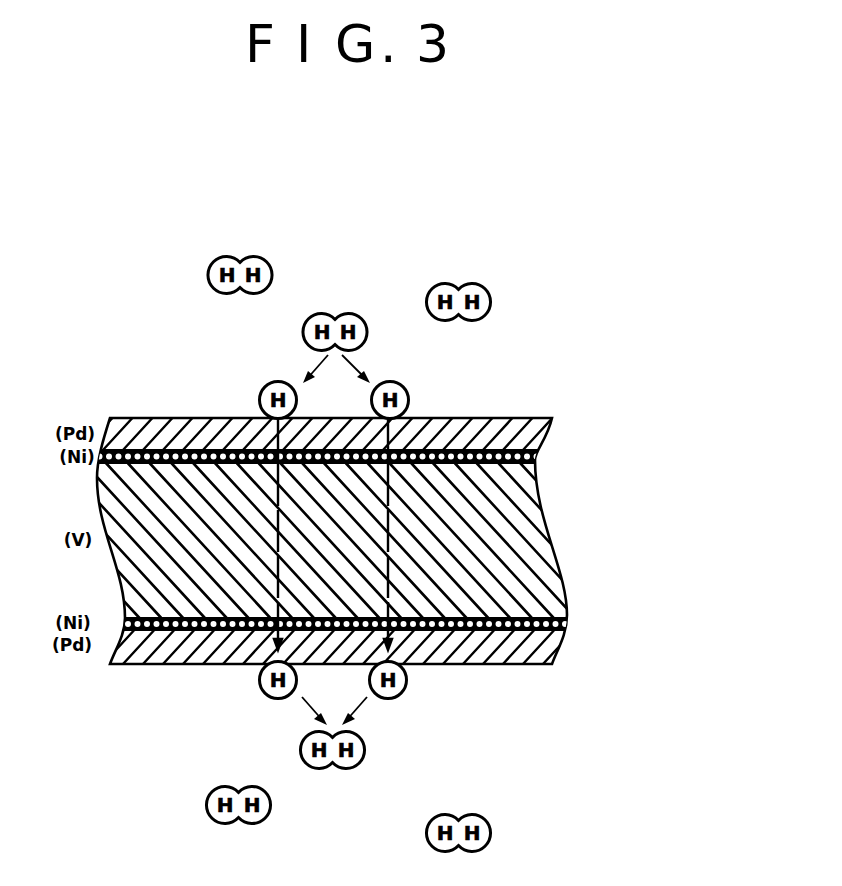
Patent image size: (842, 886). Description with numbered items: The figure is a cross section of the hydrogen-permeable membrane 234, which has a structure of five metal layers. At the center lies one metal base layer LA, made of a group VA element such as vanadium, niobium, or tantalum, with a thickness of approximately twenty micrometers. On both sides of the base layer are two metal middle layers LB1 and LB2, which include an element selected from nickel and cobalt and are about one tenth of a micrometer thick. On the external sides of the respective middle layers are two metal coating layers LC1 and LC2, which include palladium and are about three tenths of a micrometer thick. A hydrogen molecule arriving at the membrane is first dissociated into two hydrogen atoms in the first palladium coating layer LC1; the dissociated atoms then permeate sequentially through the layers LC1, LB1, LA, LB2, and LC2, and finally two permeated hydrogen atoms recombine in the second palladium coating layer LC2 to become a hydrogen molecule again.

The hydrogen-permeable membrane 234 is at (375, 488).
The first Pd coating layer LC1 is at (533, 430).
The metal middle layer LB1 is at (533, 453).
The metal base layer LA is at (533, 535).
The metal middle layer LB2 is at (562, 620).
The second Pd coating layer LC2 is at (540, 642).